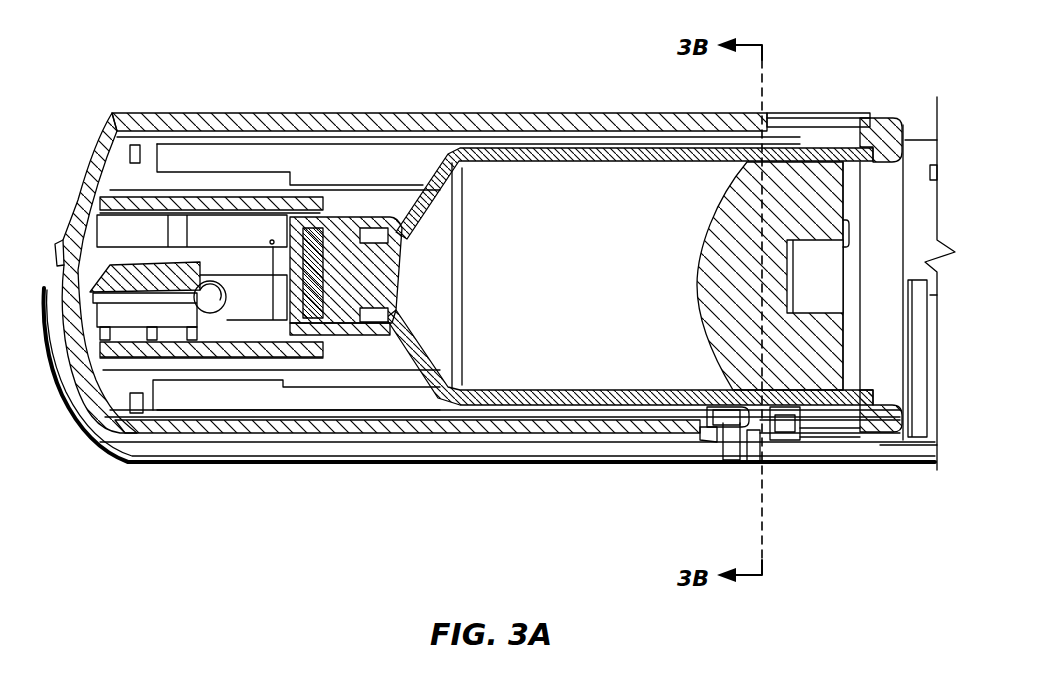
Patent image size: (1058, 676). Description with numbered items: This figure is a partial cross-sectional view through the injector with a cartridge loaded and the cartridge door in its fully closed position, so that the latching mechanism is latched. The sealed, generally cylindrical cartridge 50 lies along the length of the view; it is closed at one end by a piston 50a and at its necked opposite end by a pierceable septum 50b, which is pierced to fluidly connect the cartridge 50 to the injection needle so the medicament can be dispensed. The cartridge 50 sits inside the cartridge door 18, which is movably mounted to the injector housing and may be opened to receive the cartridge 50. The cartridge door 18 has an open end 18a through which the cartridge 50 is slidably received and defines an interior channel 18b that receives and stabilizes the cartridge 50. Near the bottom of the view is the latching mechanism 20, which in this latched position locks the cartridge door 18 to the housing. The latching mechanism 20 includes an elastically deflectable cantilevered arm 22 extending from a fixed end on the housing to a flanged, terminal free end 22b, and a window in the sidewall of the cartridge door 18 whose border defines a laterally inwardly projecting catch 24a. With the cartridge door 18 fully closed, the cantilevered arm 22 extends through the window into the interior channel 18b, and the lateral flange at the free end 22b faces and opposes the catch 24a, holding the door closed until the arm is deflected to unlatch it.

The cartridge door 18 is at (228, 440).
The open end 18a is at (866, 118).
The interior channel 18b is at (350, 400).
The latching mechanism 20 is at (722, 392).
The cantilevered arm 22 is at (740, 440).
The free end 22b is at (731, 442).
The catch 24a is at (713, 440).
The cartridge 50 is at (598, 135).
The piston 50a is at (801, 190).
The pierceable septum 50b is at (313, 238).